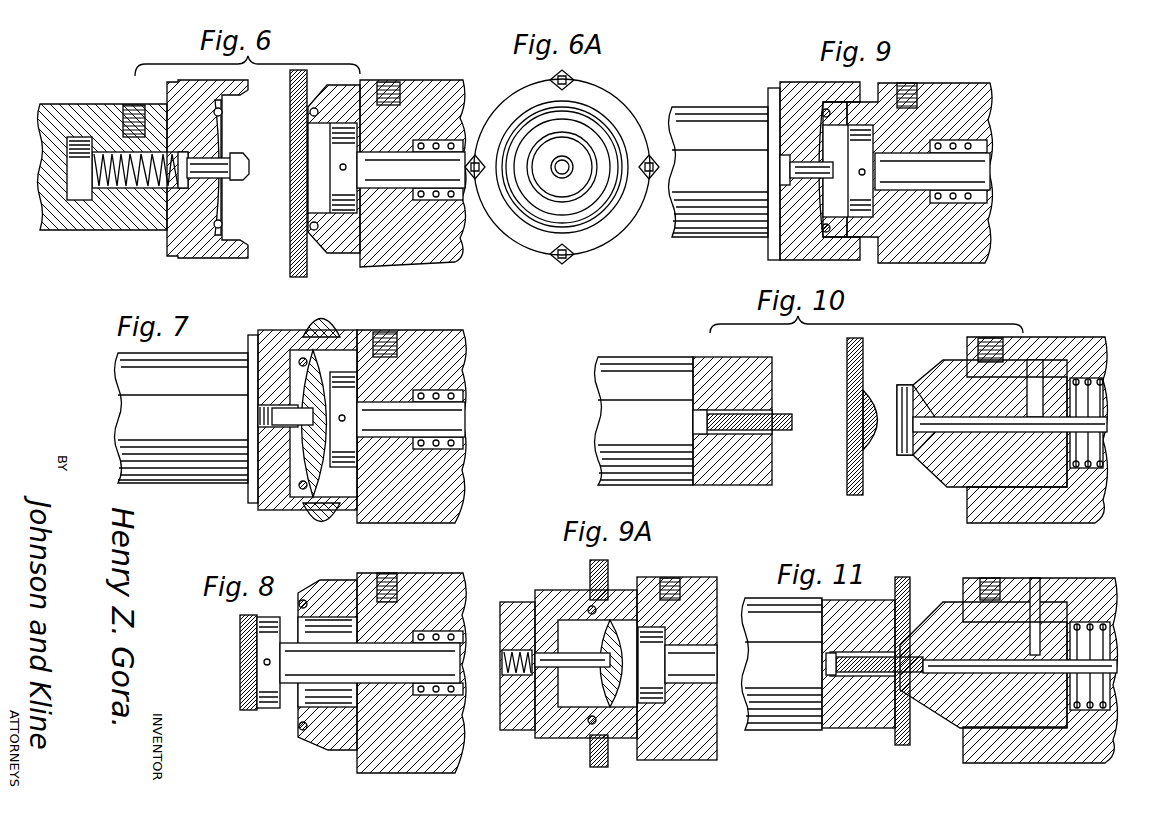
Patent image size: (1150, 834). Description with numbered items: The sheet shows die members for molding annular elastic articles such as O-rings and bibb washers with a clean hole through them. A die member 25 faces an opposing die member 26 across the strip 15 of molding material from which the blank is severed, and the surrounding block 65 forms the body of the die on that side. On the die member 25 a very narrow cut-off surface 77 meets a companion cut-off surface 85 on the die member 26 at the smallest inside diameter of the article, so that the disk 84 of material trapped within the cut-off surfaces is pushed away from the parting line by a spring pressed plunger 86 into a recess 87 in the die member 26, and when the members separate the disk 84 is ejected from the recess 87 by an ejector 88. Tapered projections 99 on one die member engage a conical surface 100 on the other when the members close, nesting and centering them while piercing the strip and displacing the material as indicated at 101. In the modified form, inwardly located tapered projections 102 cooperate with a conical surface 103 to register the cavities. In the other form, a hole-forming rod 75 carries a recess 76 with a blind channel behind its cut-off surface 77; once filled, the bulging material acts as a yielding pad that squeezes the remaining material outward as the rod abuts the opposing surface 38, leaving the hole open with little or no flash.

In FIG. 6, the strip 15 is at (291, 265).
In FIG. 10, the strip 15 is at (847, 360).
In FIG. 9A, the strip 15 is at (590, 574).
In FIG. 11, the strip 15 is at (905, 581).
In FIG. 6, the die member 25 is at (116, 233).
In FIG. 9, the die member 25 is at (716, 108).
In FIG. 7, the die member 25 is at (190, 487).
In FIG. 10, the die member 25 is at (706, 358).
In FIG. 9A, the die member 25 is at (515, 732).
In FIG. 11, the die member 25 is at (805, 732).
In FIG. 6, the die member 26 is at (344, 85).
In FIG. 9, the die member 26 is at (965, 85).
In FIG. 7, the die member 26 is at (437, 331).
In FIG. 10, the die member 26 is at (939, 363).
In FIG. 8, the die member 26 is at (330, 754).
In FIG. 9A, the die member 26 is at (636, 747).
In FIG. 11, the die member 26 is at (940, 601).
In FIG. 10, the opposing surface 38 is at (1015, 434).
In FIG. 11, the opposing surface 38 is at (1008, 676).
In FIG. 6, the body block 65 is at (450, 86).
In FIG. 7, the body block 65 is at (452, 334).
In FIG. 10, the body block 65 is at (1062, 341).
In FIG. 8, the body block 65 is at (413, 580).
In FIG. 11, the body block 65 is at (1076, 581).
In FIG. 10, the hole-forming rod 75 is at (750, 435).
In FIG. 11, the hole-forming rod 75 is at (862, 678).
In FIG. 10, the recess 76 is at (785, 434).
In FIG. 6, the cut-off surface 77 is at (226, 219).
In FIG. 10, the cut-off surface 77 is at (792, 420).
In FIG. 7, the disk 84 is at (341, 523).
In FIG. 8, the disk 84 is at (240, 652).
In FIG. 6, the cut-off surface 85 is at (312, 105).
In FIG. 10, the cut-off surface 85 is at (777, 414).
In FIG. 6, the spring pressed plunger 86 is at (214, 167).
In FIG. 6A, the spring pressed plunger 86 is at (569, 173).
In FIG. 9, the spring pressed plunger 86 is at (806, 170).
In FIG. 7, the spring pressed plunger 86 is at (270, 414).
In FIG. 9A, the spring pressed plunger 86 is at (573, 670).
In FIG. 6, the recess 87 is at (318, 170).
In FIG. 9, the recess 87 is at (844, 147).
In FIG. 8, the recess 87 is at (330, 703).
In FIG. 6, the ejector 88 is at (402, 150).
In FIG. 9, the ejector 88 is at (920, 193).
In FIG. 7, the ejector 88 is at (452, 419).
In FIG. 8, the ejector 88 is at (405, 657).
In FIG. 9A, the ejector 88 is at (688, 691).
In FIG. 6, the tapered projections 99 is at (238, 90).
In FIG. 6A, the tapered projections 99 is at (576, 84).
In FIG. 9, the tapered projections 99 is at (845, 96).
In FIG. 6, the conical surface 100 is at (318, 259).
In FIG. 9, the conical surface 100 is at (858, 262).
In FIG. 8, the conical surface 100 is at (322, 582).
In FIG. 7, the displaced material 101 is at (347, 324).
In FIG. 9A, the tapered projections 102 is at (611, 742).
In FIG. 9A, the conical surface 103 is at (603, 624).